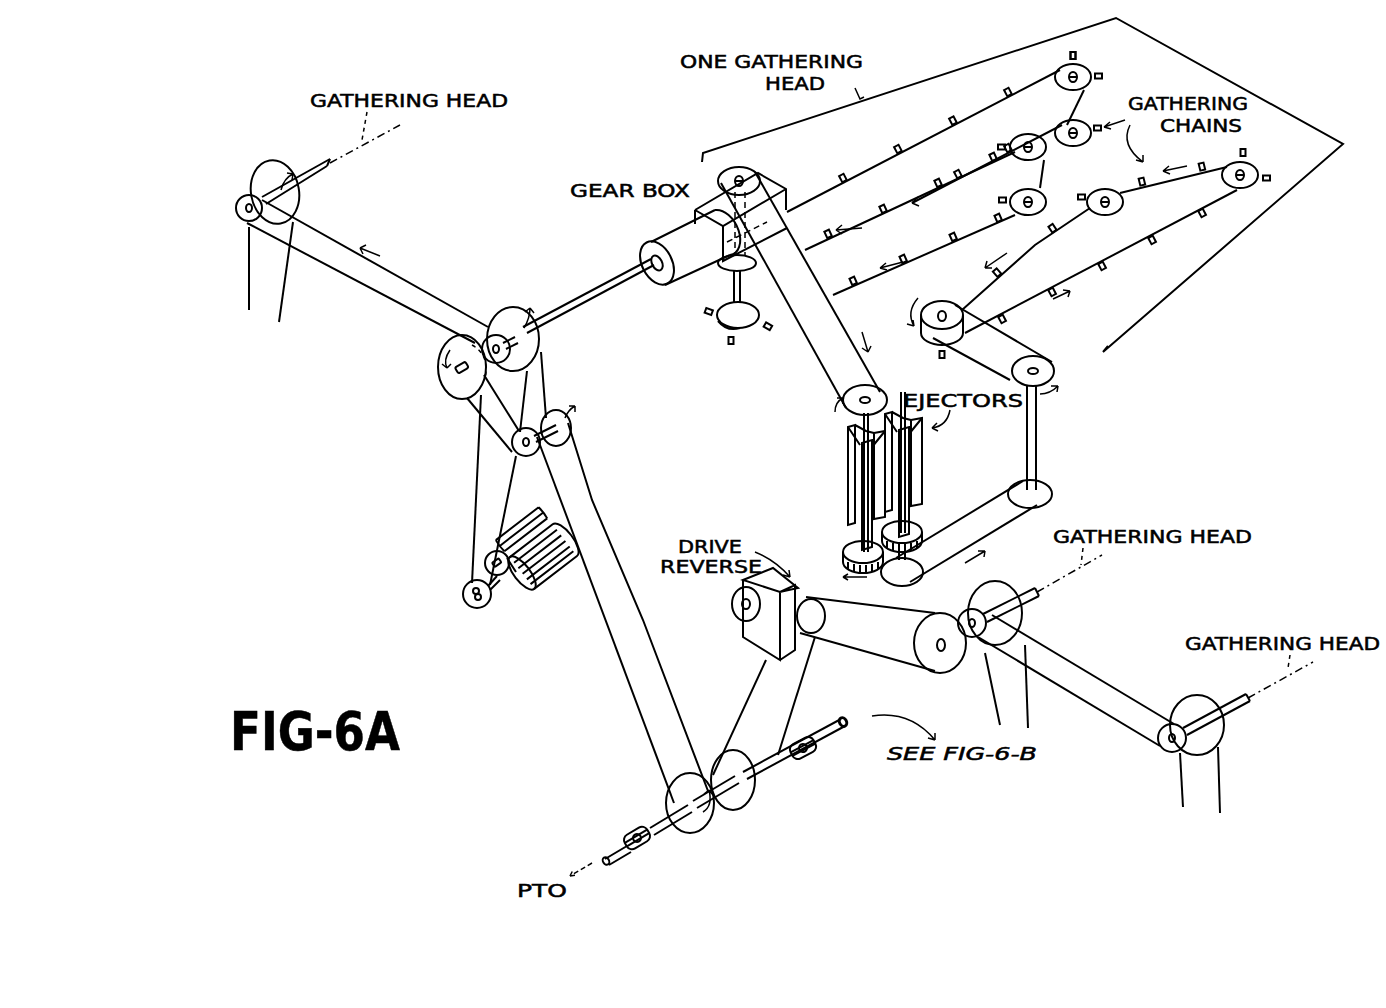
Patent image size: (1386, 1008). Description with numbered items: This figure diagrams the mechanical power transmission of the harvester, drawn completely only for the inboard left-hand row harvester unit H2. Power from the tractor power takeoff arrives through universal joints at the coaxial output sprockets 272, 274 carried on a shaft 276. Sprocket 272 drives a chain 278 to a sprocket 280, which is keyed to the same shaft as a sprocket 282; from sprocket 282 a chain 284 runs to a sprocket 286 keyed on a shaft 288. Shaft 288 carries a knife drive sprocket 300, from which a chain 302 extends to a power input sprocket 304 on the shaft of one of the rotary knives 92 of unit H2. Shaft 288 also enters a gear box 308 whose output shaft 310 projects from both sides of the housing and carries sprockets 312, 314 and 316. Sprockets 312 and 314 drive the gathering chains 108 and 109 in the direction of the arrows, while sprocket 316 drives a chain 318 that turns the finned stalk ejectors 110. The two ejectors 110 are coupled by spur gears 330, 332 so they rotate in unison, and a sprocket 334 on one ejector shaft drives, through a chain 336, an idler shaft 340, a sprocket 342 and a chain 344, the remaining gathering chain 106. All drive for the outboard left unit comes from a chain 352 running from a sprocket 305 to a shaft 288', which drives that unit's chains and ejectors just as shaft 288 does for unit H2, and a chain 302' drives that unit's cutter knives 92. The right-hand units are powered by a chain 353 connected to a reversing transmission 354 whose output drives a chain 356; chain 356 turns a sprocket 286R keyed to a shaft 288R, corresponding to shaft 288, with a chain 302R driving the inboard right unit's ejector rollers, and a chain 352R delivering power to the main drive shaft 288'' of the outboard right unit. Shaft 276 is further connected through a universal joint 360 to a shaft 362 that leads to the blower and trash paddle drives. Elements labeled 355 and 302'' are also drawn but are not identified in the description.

The inboard lefthand harvester unit H2 is at (1186, 300).
The gathering chain 108 is at (842, 292).
The upper gathering chain 109 is at (1080, 100).
The gathering chain 106 is at (1056, 225).
The chain 344 is at (1022, 337).
The sprocket 342 is at (1056, 372).
The idler shaft 340 is at (1038, 443).
The chain 336 is at (1010, 530).
The rotary finned stalk ejectors 110 is at (848, 470).
The spur gear 330 is at (845, 548).
The spur gear 332 is at (917, 528).
The sprocket 334 is at (908, 584).
The gear box 308 is at (693, 213).
The sprocket 316 is at (753, 172).
The sprocket 314 is at (722, 270).
The output shaft 310 is at (718, 306).
The sprocket 312 is at (730, 323).
The chain 318 is at (826, 372).
The shaft 288 is at (512, 322).
The pulley 355 is at (236, 208).
The shaft 288' is at (331, 164).
The chain 352 is at (405, 285).
The chain 302' is at (303, 272).
The knife drive sprocket 300 is at (540, 352).
The sprocket 305 is at (510, 368).
The sprocket 286 is at (458, 388).
The chain 284 is at (474, 411).
The sprocket 282 is at (528, 458).
The sprocket 280 is at (575, 430).
The chain 302 is at (463, 490).
The power input sprocket 304 is at (478, 608).
The rotary knives 92 is at (552, 528).
The chain 278 is at (626, 690).
The reversing transmission 354 is at (745, 637).
The chain 356 is at (884, 658).
The sprocket 286R is at (948, 675).
The chain 353 is at (796, 690).
The output sprocket 274 is at (760, 744).
The output sprocket 272 is at (700, 836).
The universal joint 360 is at (814, 758).
The shaft 276 is at (784, 766).
The shaft 362 is at (846, 727).
The shaft 288R is at (1041, 600).
The chain 352R is at (1097, 685).
The chain 302R is at (1031, 712).
The main drive shaft 288'' is at (1242, 708).
The frame leg 302'' is at (1246, 780).